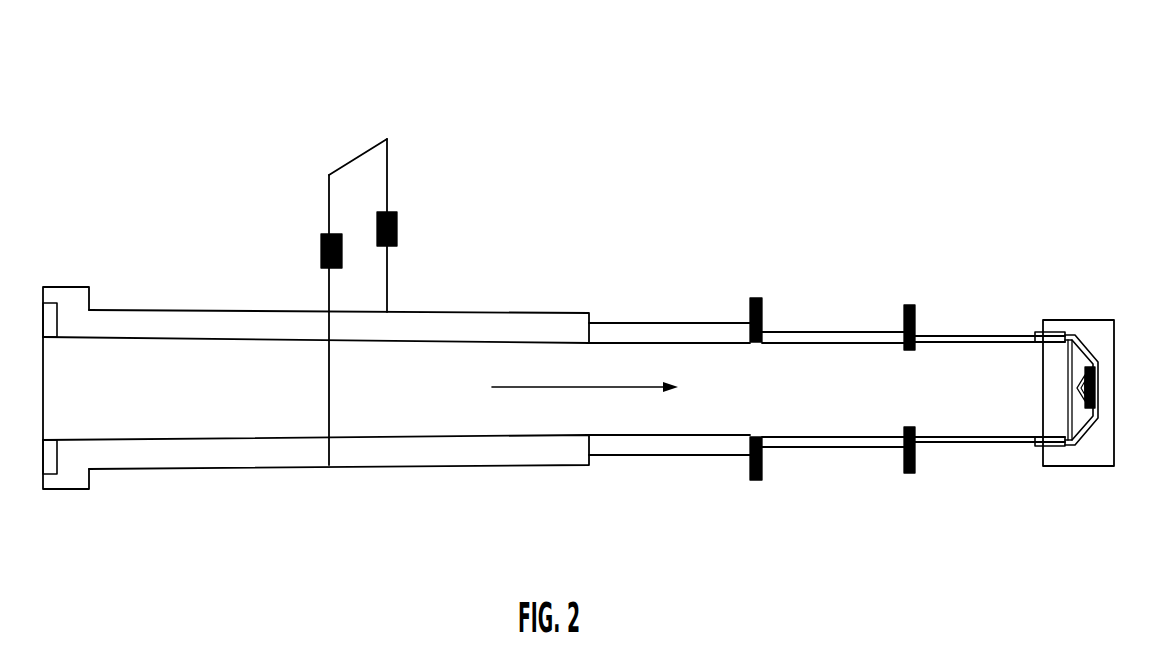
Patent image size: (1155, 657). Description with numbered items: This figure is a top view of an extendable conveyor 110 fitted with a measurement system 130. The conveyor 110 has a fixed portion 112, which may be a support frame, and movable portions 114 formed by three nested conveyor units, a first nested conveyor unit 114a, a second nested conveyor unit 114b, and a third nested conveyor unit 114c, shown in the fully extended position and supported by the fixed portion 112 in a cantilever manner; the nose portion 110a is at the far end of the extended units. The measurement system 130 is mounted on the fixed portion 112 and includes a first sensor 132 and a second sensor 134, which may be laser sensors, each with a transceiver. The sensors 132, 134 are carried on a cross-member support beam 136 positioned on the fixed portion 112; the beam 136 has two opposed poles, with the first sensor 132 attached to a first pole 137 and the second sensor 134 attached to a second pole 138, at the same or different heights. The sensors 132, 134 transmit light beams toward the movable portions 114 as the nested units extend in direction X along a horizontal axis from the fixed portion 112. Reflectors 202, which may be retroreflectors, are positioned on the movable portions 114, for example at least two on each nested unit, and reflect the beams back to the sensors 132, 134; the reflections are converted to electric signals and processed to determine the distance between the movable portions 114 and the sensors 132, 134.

The extendable conveyor 110 is at (547, 58).
The nose portion 110a is at (1093, 320).
The fixed portion 112 is at (458, 452).
The movable portions 114 is at (1097, 478).
The first nested conveyor unit 114a is at (637, 322).
The second nested conveyor unit 114b is at (793, 332).
The third nested conveyor unit 114c is at (980, 335).
The measurement system 130 is at (303, 92).
The first sensor 132 is at (321, 252).
The second sensor 134 is at (397, 228).
The cross-member support beam 136 is at (363, 152).
The first pole 137 is at (329, 196).
The second pole 138 is at (387, 163).
The reflectors 202 is at (753, 480).